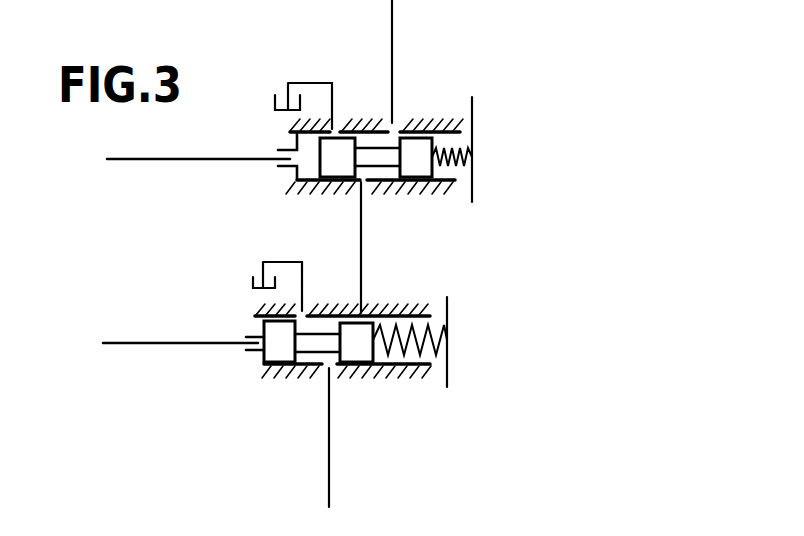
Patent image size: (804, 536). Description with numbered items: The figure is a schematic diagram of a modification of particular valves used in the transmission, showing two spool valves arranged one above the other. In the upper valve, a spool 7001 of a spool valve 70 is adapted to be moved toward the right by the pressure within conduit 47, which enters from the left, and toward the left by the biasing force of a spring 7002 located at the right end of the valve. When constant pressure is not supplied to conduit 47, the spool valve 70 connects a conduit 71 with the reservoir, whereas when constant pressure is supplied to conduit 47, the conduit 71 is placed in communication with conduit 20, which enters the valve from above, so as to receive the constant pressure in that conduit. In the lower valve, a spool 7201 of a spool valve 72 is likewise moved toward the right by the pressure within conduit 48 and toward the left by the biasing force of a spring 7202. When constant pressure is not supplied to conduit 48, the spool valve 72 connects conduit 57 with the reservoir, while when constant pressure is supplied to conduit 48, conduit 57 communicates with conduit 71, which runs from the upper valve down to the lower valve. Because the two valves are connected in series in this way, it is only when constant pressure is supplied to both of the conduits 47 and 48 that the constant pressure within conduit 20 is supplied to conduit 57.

The conduit 20 is at (393, 66).
The spool valve 70 is at (413, 124).
The spool 7001 is at (420, 172).
The spring 7002 is at (472, 162).
The conduit 47 is at (202, 161).
The conduit 71 is at (361, 242).
The spool valve 72 is at (357, 366).
The spool 7201 is at (283, 353).
The spring 7202 is at (420, 353).
The conduit 48 is at (177, 342).
The conduit 57 is at (329, 441).